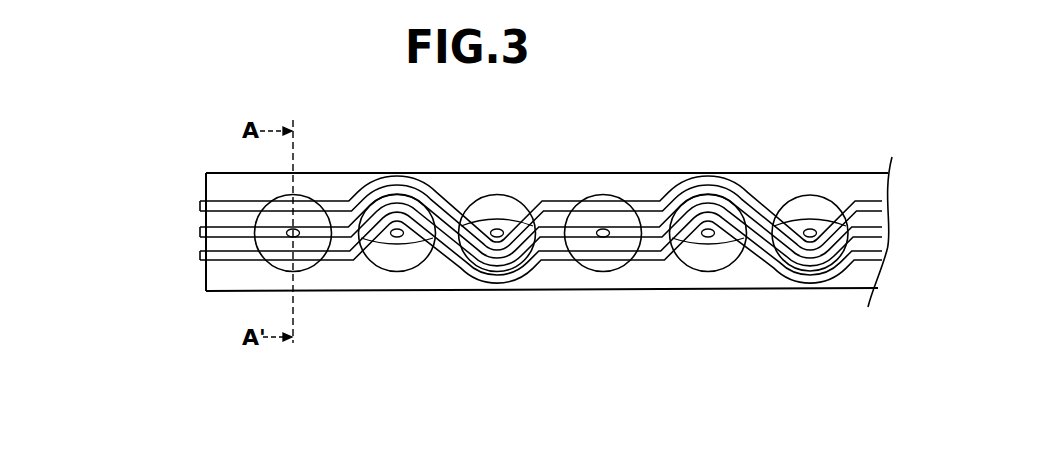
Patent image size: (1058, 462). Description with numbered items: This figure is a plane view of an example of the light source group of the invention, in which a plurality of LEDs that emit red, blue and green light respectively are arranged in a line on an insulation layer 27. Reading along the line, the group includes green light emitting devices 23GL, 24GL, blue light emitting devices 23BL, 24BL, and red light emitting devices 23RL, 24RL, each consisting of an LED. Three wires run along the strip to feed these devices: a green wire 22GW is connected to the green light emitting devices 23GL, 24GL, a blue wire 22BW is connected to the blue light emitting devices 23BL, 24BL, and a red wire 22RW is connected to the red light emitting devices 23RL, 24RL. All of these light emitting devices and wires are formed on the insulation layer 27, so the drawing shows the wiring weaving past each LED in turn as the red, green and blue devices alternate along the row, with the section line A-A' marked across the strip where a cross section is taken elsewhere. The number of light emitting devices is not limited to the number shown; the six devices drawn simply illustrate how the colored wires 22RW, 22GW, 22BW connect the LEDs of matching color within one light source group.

The red wire 22RW is at (226, 206).
The green wire 22GW is at (204, 228).
The blue wire 22BW is at (210, 259).
The green light emitting device 23GL is at (292, 237).
The blue light emitting device 23BL is at (393, 238).
The red light emitting device 23RL is at (499, 229).
The green light emitting device 24GL is at (600, 237).
The blue light emitting device 24BL is at (705, 237).
The red light emitting device 24RL is at (811, 229).
The insulation layer 27 is at (413, 283).